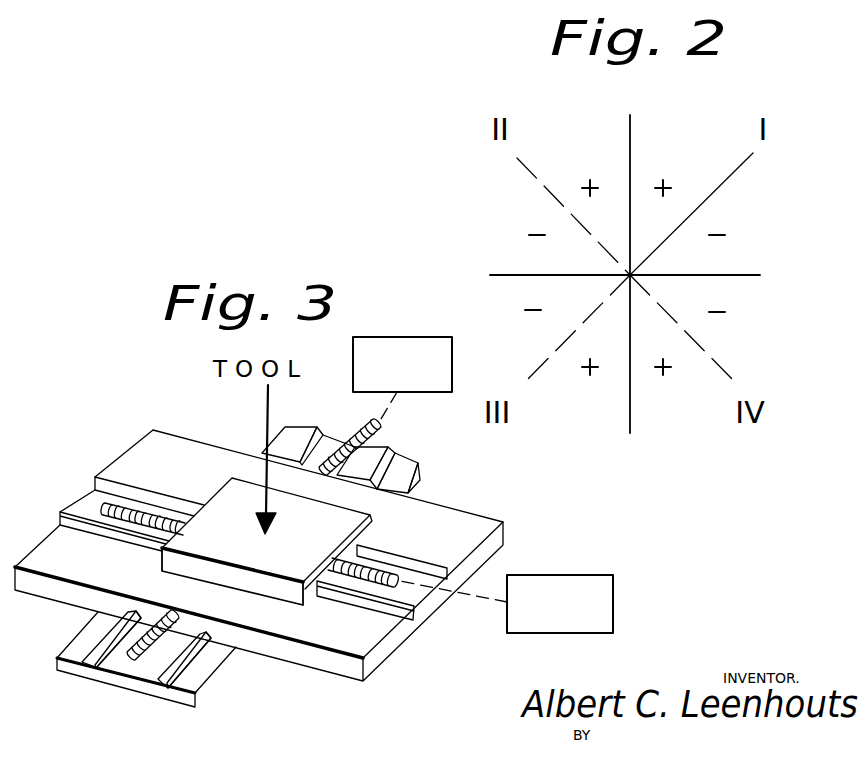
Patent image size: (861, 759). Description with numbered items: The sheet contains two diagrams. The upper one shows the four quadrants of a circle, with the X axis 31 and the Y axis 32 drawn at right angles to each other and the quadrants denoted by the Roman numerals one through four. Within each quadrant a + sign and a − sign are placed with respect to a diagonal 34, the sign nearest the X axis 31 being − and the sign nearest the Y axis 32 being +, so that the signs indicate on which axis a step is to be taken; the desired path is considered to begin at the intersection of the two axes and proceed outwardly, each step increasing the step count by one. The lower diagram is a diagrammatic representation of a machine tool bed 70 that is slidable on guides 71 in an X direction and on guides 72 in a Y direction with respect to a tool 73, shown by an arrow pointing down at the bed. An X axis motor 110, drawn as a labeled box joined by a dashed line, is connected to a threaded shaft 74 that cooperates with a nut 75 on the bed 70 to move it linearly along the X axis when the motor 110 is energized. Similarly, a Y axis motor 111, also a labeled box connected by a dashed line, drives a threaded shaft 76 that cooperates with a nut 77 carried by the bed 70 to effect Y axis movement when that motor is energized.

In FIG. 2, the X axis 31 is at (760, 274).
In FIG. 2, the Y axis 32 is at (630, 405).
In FIG. 2, the diagonal 34 is at (565, 154).
In FIG. 3, the machine tool bed 70 is at (283, 589).
In FIG. 3, the guides 71 is at (408, 594).
In FIG. 3, the guides 72 is at (160, 680).
In FIG. 3, the tool 73 is at (266, 410).
In FIG. 3, the threaded shaft 74 is at (380, 575).
In FIG. 3, the nut 75 is at (335, 552).
In FIG. 3, the threaded shaft 76 is at (147, 628).
In FIG. 3, the nut 77 is at (185, 617).
In FIG. 3, the X axis motor 110 is at (577, 574).
In FIG. 3, the Y axis motor 111 is at (413, 337).